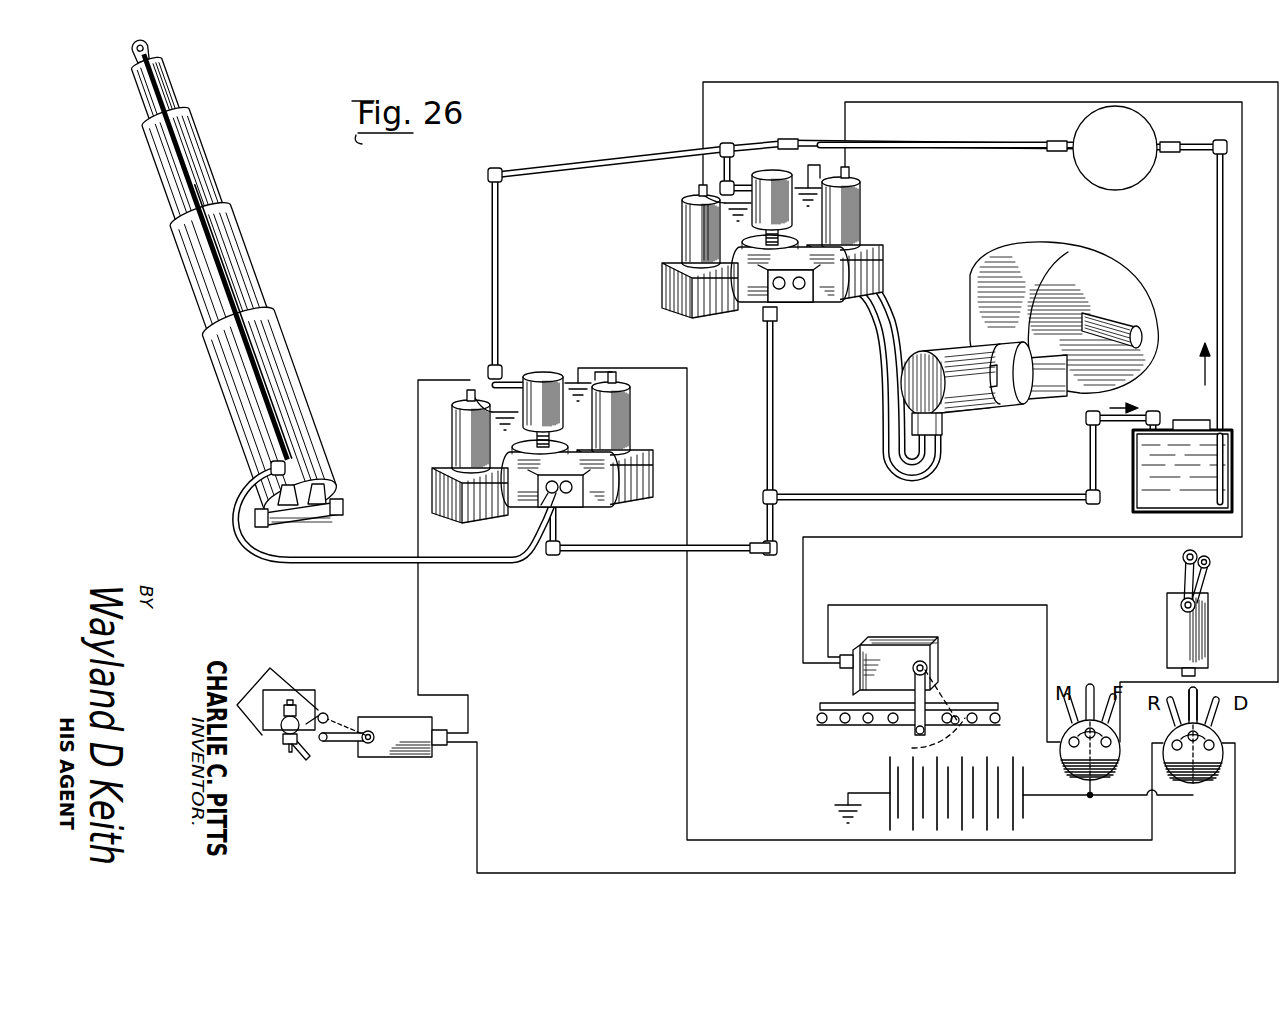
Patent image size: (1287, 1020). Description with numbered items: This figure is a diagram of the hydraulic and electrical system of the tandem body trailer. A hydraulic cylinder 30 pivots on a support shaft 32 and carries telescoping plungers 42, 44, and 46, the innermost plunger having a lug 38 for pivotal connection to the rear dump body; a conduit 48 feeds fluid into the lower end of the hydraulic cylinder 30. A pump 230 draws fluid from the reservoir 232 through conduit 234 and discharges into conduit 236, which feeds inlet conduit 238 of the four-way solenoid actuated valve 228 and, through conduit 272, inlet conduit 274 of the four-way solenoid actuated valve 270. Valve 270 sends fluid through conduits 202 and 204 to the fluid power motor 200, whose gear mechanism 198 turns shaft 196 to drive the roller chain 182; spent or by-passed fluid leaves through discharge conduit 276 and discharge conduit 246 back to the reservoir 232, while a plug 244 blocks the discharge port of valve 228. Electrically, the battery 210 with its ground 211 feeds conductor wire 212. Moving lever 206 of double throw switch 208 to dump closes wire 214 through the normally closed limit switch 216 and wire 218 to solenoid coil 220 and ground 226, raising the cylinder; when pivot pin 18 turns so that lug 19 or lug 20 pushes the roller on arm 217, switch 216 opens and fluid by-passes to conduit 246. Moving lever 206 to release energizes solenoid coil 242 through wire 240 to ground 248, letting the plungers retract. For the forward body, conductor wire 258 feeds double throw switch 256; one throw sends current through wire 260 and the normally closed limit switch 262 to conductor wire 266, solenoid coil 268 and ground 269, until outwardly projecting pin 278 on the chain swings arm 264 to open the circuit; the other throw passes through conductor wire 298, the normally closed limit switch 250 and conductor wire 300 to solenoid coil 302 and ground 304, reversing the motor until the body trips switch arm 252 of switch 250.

The lug 38 is at (150, 48).
The telescoping plunger 42 is at (160, 97).
The telescoping plunger 44 is at (178, 182).
The telescoping plunger 46 is at (200, 300).
The hydraulic cylinder 30 is at (218, 378).
The support shaft 32 is at (344, 508).
The conduit 48 is at (232, 517).
The wire 218 is at (418, 620).
The wire 240 is at (1130, 872).
The wire 214 is at (1235, 820).
The battery 210 is at (1028, 822).
The conductor wire 212 is at (1028, 797).
The conductor wire 258 is at (1088, 790).
The ground 211 is at (845, 800).
The conductor wire 300 is at (1278, 592).
The conductor wire 298 is at (1158, 683).
The conductor wire 266 is at (806, 580).
The wire 260 is at (1031, 605).
The ground 269 is at (812, 197).
The conduit 272 is at (742, 182).
The conduit 236 is at (1005, 148).
The conduit 234 is at (1216, 262).
The pump 230 is at (1114, 190).
The discharge conduit 276 is at (776, 390).
The discharge conduit 246 is at (932, 500).
The conduit 202 is at (882, 345).
The conduit 204 is at (880, 410).
The reservoir 232 is at (1135, 505).
The gear mechanism 198 is at (1122, 265).
The shaft 196 is at (1140, 322).
The fluid power motor 200 is at (975, 410).
The solenoid coil 220 is at (448, 418).
The solenoid coil 242 is at (628, 430).
The four-way solenoid actuated valve 228 is at (592, 502).
The ground 226 is at (512, 398).
The inlet conduit 238 is at (578, 383).
The ground 248 is at (614, 377).
The plug 244 is at (568, 497).
The solenoid coil 302 is at (688, 215).
The ground 304 is at (702, 230).
The solenoid coil 268 is at (862, 222).
The inlet conduit 274 is at (760, 305).
The four-way solenoid actuated valve 270 is at (801, 302).
The normally closed limit switch 216 is at (410, 758).
The arm 217 is at (337, 733).
The lug 19 is at (322, 713).
The pivot pin 18 is at (285, 740).
The lug 20 is at (297, 690).
The normally closed limit switch 262 is at (930, 658).
The roller chain 182 is at (996, 705).
The arm 264 is at (918, 735).
The outwardly projecting pin 278 is at (950, 722).
The double throw switch 256 is at (1060, 752).
The double throw switch 208 is at (1215, 732).
The lever 206 is at (1200, 690).
The normally closed limit switch 250 is at (1202, 640).
The switch arm 252 is at (1183, 577).